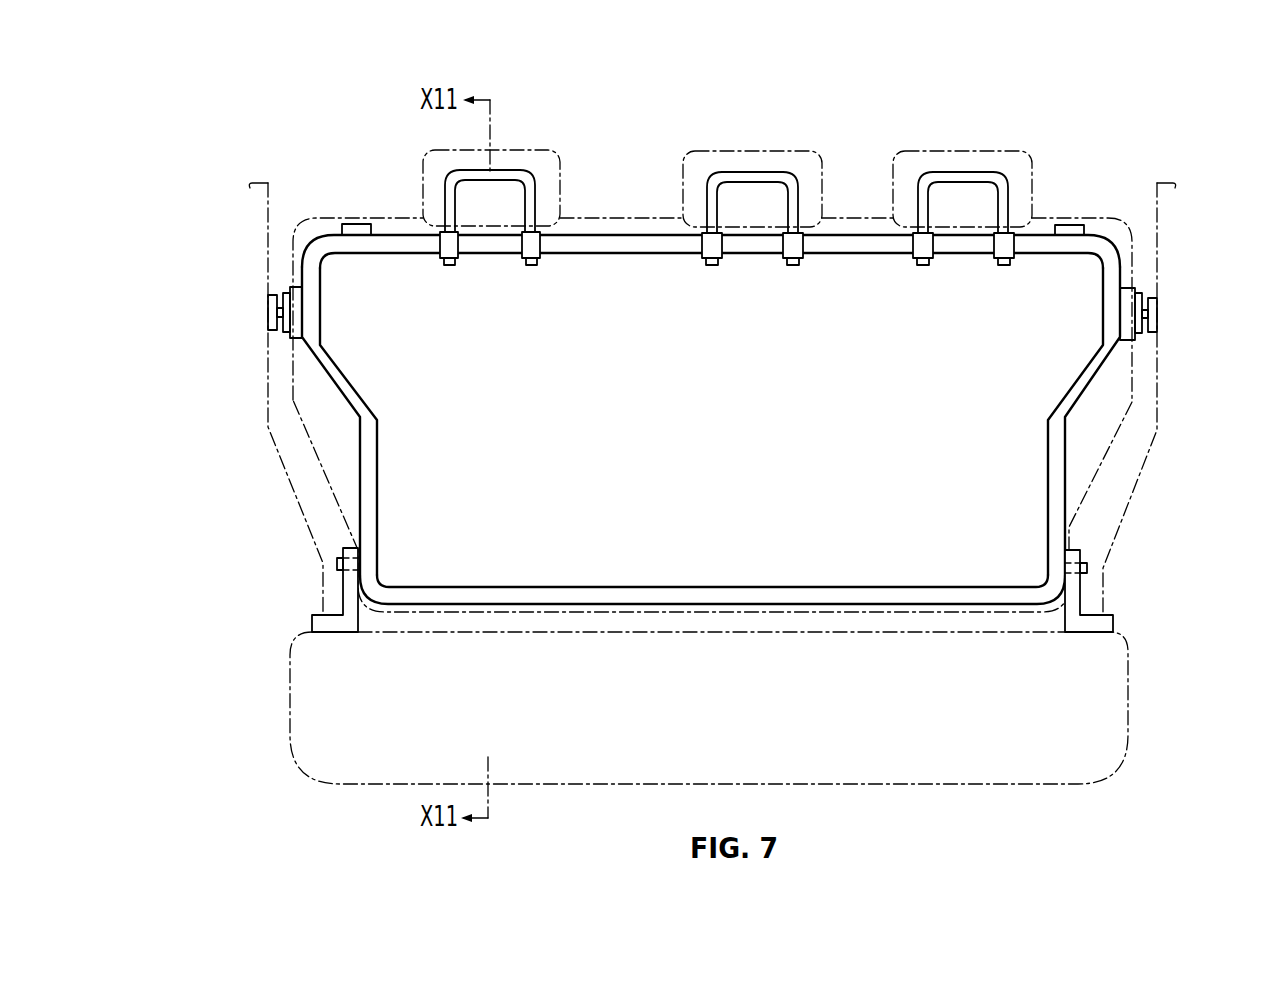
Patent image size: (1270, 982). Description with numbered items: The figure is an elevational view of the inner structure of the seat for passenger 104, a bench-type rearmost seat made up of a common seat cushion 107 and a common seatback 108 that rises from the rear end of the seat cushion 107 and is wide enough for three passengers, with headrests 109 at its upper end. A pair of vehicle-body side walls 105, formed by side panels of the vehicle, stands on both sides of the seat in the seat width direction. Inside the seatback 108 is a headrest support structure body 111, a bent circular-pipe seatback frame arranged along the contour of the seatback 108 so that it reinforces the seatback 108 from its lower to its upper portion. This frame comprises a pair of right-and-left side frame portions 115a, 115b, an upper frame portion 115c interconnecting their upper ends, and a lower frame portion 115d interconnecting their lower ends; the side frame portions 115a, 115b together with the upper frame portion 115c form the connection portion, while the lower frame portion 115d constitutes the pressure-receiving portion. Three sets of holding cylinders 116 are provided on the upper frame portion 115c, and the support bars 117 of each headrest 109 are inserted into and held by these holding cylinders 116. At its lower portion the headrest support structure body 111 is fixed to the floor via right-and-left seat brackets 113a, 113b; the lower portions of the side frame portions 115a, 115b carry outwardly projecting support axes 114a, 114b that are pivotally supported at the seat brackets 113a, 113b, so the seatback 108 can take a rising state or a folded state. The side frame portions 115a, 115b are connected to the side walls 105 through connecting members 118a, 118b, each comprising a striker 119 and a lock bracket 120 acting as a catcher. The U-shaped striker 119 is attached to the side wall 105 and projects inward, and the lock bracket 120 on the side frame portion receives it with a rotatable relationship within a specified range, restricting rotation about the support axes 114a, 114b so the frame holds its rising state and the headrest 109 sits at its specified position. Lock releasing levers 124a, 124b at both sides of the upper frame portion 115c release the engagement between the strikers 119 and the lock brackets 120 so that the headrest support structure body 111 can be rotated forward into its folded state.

The seat for passenger 104 is at (860, 105).
The vehicle-body side wall 105 is at (268, 183).
The seat cushion 107 is at (1127, 645).
The seatback 108 is at (1108, 210).
The headrest 109 is at (423, 162).
The headrest support structure body 111 is at (662, 533).
The seat bracket 113a is at (350, 595).
The seat bracket 113b is at (1063, 618).
The support axis 114a is at (337, 565).
The support axis 114b is at (1088, 567).
The side frame portion 115a is at (340, 386).
The side frame portion 115b is at (1048, 441).
The upper frame portion 115c is at (853, 248).
The lower frame portion 115d is at (465, 597).
The holding cylinder 116 is at (525, 245).
The support bar 117 is at (505, 178).
The connecting member 118a is at (257, 320).
The connecting member 118b is at (1147, 290).
The striker 119 is at (278, 296).
The lock bracket 120 is at (282, 333).
The lock releasing lever 124a is at (356, 224).
The lock releasing lever 124b is at (1069, 225).